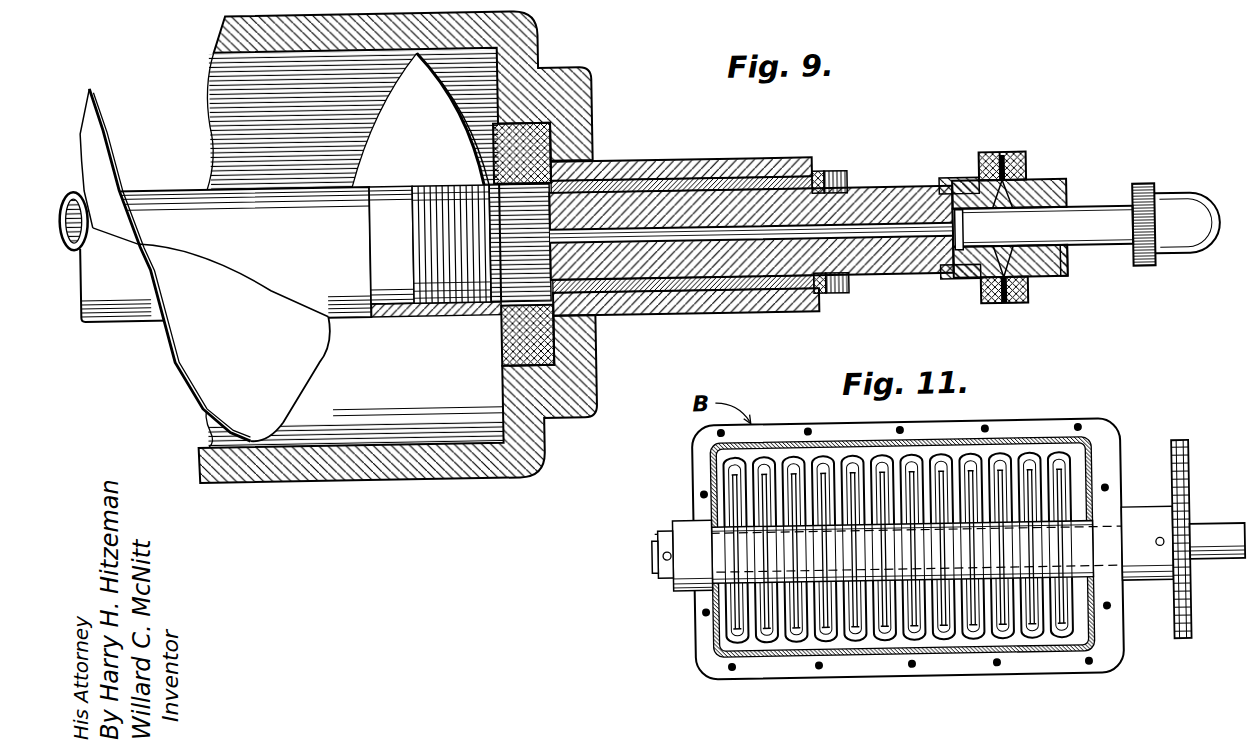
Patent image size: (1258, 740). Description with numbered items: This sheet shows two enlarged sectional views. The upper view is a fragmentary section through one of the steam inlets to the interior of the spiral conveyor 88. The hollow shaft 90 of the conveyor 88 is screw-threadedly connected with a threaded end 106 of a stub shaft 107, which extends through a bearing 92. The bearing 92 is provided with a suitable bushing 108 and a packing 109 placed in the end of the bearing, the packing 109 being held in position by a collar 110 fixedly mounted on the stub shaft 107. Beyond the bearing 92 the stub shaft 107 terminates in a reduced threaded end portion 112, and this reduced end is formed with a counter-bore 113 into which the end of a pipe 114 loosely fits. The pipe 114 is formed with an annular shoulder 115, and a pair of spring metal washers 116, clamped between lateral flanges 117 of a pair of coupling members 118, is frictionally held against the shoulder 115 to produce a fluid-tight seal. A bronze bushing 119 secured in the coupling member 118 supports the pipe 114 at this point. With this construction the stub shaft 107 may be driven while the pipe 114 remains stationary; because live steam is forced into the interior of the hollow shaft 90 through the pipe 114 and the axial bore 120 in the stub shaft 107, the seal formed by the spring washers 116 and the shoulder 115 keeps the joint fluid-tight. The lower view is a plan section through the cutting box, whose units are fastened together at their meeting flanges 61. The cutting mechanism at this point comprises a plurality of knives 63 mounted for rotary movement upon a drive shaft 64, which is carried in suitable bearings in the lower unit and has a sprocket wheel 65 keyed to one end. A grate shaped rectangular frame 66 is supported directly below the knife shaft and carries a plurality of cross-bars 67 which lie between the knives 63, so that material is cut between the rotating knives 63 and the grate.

In FIG. 9, the conveyor 88 is at (187, 348).
In FIG. 9, the hollow shaft 90 is at (393, 304).
In FIG. 9, the bearing 92 is at (655, 171).
In FIG. 9, the threaded end 106 is at (457, 300).
In FIG. 9, the stub shaft 107 is at (632, 292).
In FIG. 9, the bushing 108 is at (737, 184).
In FIG. 9, the packing 109 is at (810, 191).
In FIG. 9, the collar 110 is at (840, 301).
In FIG. 9, the reduced threaded end portion 112 is at (953, 196).
In FIG. 9, the counter-bore 113 is at (958, 259).
In FIG. 9, the pipe 114 is at (1113, 246).
In FIG. 9, the annular shoulder 115 is at (1040, 186).
In FIG. 9, the spring metal washers 116 is at (1027, 170).
In FIG. 9, the lateral flanges 117 is at (998, 290).
In FIG. 9, the coupling members 118 is at (942, 281).
In FIG. 9, the bronze bushing 119 is at (1067, 196).
In FIG. 9, the axial bore 120 is at (858, 231).
In FIG. 11, the meeting flanges 61 is at (790, 668).
In FIG. 11, the knives 63 is at (795, 622).
In FIG. 11, the drive shaft 64 is at (1217, 532).
In FIG. 11, the sprocket wheel 65 is at (1193, 622).
In FIG. 11, the grate shaped rectangular frame 66 is at (878, 645).
In FIG. 11, the cross-bars 67 is at (1055, 457).